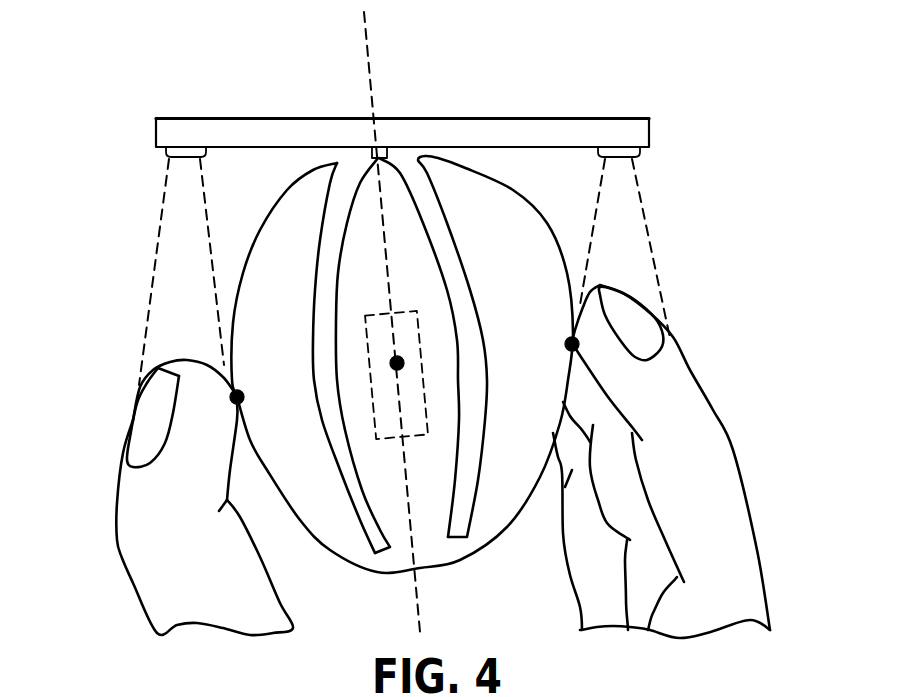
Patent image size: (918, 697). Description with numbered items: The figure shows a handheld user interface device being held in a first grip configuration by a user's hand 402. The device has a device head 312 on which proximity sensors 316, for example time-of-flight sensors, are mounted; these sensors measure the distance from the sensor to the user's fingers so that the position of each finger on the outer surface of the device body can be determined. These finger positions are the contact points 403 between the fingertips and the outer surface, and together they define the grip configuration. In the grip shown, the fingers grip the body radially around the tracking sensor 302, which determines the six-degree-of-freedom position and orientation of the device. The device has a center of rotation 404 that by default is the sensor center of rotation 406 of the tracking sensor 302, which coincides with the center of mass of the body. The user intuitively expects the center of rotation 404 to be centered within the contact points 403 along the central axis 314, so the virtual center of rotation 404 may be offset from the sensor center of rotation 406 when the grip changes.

The tracking sensor 302 is at (368, 327).
The device head 312 is at (538, 131).
The central axis 314 is at (368, 57).
The proximity sensors 316 is at (183, 158).
The user's hand 402 is at (717, 466).
The contact points 403 is at (233, 399).
The center of rotation 404 is at (216, 341).
The sensor center of rotation 406 is at (388, 364).